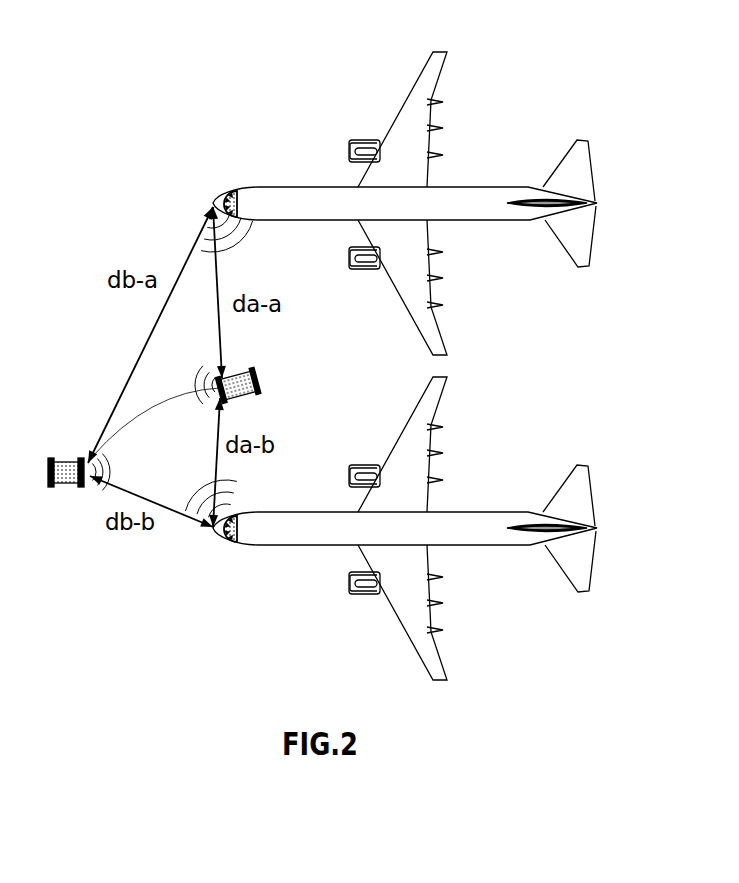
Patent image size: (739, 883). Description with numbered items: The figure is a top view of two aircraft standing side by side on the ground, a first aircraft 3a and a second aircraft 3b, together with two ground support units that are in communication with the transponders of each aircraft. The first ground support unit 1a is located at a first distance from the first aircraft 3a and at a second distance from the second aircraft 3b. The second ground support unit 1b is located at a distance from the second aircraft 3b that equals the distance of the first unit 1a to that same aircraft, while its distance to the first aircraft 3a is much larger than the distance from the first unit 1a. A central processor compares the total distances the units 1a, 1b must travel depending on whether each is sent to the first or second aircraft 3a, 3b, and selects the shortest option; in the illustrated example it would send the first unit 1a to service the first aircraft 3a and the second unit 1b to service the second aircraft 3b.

The first aircraft 3a is at (277, 186).
The second aircraft 3b is at (273, 509).
The first ground support unit 1a is at (254, 380).
The second ground support unit 1b is at (63, 488).